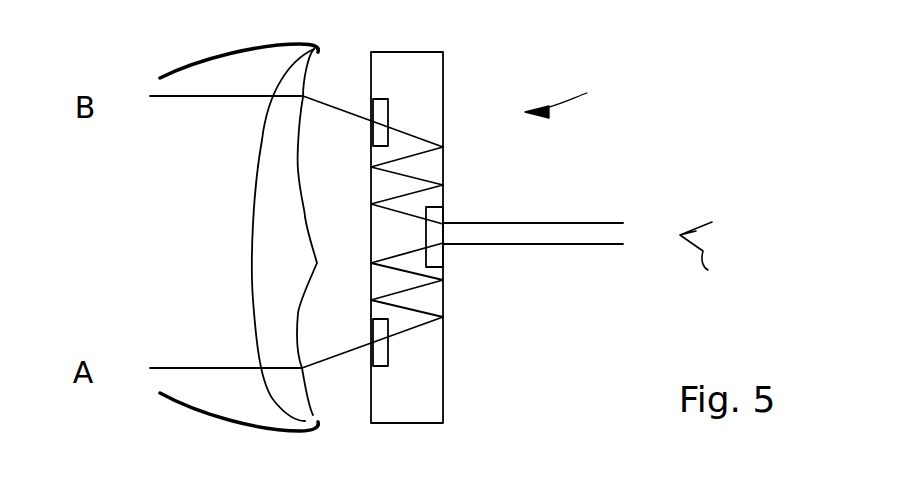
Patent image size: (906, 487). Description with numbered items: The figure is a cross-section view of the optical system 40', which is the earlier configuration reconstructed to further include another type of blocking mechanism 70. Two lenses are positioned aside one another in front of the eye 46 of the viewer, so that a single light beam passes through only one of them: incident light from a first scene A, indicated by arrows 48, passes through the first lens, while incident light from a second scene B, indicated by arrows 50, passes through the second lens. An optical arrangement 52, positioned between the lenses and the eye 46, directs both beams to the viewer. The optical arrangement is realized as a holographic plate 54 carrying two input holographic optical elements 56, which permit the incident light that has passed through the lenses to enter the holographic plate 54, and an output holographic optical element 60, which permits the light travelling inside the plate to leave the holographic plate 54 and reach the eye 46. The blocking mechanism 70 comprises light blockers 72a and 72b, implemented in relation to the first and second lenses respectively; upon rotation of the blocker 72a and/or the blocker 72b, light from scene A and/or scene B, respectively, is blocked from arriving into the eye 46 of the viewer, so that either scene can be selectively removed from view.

The blocking mechanism 70 is at (283, 41).
The light blocker 72b is at (176, 68).
The light blocker 72a is at (178, 413).
The arrows indicating incident light from scene B 50 is at (167, 103).
The arrows indicating incident light from scene A 48 is at (190, 366).
The optical arrangement 52 is at (466, 252).
The holographic plate 54 is at (430, 398).
The input holographic optical element 56 is at (383, 107).
The output holographic optical element 60 is at (437, 215).
The optical system 40' is at (577, 98).
The eye of the viewer 46 is at (706, 247).